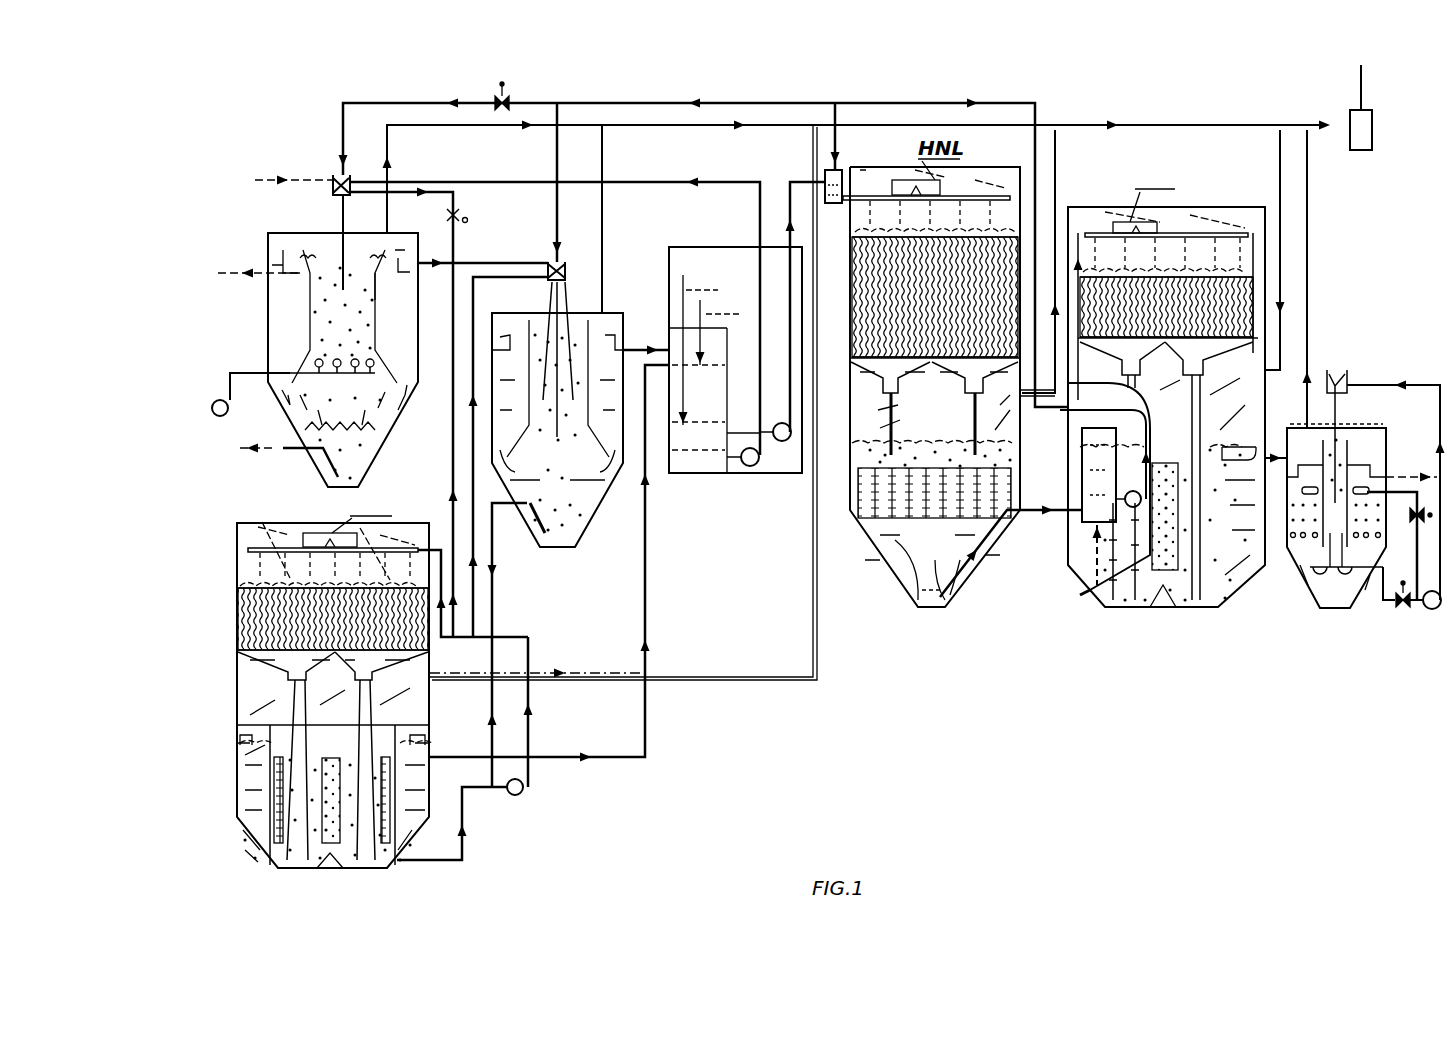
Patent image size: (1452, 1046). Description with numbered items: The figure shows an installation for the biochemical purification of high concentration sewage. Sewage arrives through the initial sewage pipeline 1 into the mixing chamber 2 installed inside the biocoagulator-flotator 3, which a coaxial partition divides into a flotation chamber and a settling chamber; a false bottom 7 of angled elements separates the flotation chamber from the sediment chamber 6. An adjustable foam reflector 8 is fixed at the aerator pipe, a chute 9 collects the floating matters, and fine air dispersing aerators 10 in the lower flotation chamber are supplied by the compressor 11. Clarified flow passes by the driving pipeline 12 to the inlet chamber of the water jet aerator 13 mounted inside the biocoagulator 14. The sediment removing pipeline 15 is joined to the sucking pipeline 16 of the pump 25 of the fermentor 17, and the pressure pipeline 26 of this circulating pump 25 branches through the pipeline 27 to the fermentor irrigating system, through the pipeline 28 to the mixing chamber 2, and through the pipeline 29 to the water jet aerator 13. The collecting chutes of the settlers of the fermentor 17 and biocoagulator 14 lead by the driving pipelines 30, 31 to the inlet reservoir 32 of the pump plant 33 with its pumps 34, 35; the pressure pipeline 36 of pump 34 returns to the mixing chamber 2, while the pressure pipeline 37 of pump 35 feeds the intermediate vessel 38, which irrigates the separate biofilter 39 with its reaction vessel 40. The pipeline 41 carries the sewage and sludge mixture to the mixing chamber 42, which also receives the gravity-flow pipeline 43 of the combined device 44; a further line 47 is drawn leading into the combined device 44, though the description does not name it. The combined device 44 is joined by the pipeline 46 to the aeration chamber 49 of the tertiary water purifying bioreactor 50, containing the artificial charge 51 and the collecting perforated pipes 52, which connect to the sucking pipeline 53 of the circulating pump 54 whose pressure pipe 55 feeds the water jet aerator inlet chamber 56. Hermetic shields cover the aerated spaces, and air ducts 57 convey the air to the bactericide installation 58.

The initial sewage pipeline 1 is at (316, 178).
The mixing chamber 2 is at (332, 190).
The biocoagulator-flotator 3 is at (326, 346).
The sediment chamber 6 is at (325, 470).
The false bottom 7 is at (348, 428).
The adjustable foam reflector 8 is at (350, 270).
The chute 9 is at (392, 255).
The fine air dispersing aerators 10 is at (375, 368).
The compressor 11 is at (217, 417).
The driving pipeline 12 is at (468, 262).
The water jet aerator 13 is at (568, 265).
The biocoagulator 14 is at (616, 312).
The sediment removing pipeline 15 is at (494, 538).
The sucking pipeline 16 is at (466, 855).
The fermentor 17 is at (316, 692).
The circulating pump 25 is at (518, 796).
The pressure pipeline 26 is at (530, 733).
The pipeline 27 is at (440, 548).
The pipeline 28 is at (451, 388).
The pipeline 29 is at (512, 278).
The driving pipeline 30 is at (620, 758).
The driving pipeline 31 is at (636, 348).
The inlet reservoir 32 is at (678, 474).
The pump plant 33 is at (735, 397).
The pump 34 is at (750, 466).
The pump 35 is at (782, 442).
The pressure pipeline 36 is at (631, 180).
The pressure pipeline 37 is at (788, 352).
The intermediate vessel 38 is at (823, 176).
The separate biofilter 39 is at (950, 353).
The reaction vessel 40 is at (905, 590).
The pipeline 41 is at (952, 585).
The mixing chamber 42 is at (1082, 465).
The gravity-flow pipeline 43 is at (1103, 582).
The combined device 44 is at (1191, 409).
The pipeline 46 is at (1133, 508).
The gas line 47 is at (594, 102).
The aeration chamber 49 is at (1341, 497).
The tertiary water purifying bioreactor 50 is at (1360, 496).
The artificial charge 51 is at (1363, 545).
The collecting perforated pipes 52 is at (1325, 555).
The sucking pipeline 53 is at (1410, 610).
The circulating pump 54 is at (1432, 610).
The pressure pipe 55 is at (1438, 425).
The water jet aerator inlet chamber 56 is at (1348, 372).
The air ducts 57 is at (433, 126).
The bactericide installation 58 is at (1373, 128).